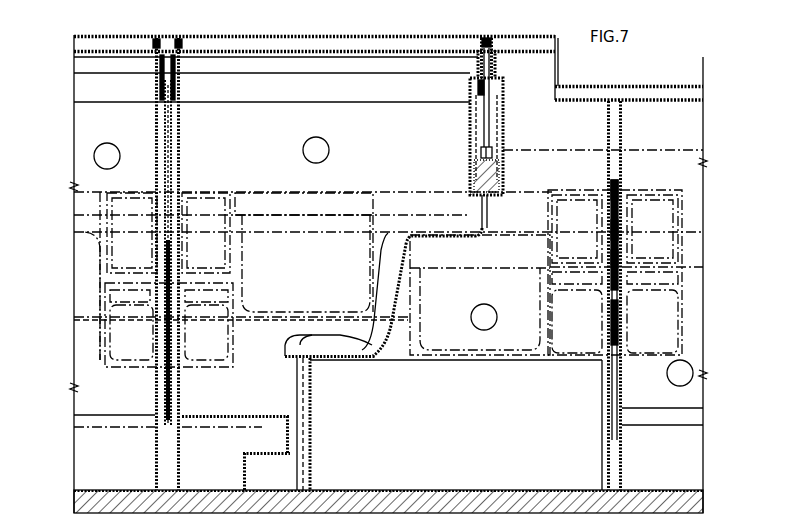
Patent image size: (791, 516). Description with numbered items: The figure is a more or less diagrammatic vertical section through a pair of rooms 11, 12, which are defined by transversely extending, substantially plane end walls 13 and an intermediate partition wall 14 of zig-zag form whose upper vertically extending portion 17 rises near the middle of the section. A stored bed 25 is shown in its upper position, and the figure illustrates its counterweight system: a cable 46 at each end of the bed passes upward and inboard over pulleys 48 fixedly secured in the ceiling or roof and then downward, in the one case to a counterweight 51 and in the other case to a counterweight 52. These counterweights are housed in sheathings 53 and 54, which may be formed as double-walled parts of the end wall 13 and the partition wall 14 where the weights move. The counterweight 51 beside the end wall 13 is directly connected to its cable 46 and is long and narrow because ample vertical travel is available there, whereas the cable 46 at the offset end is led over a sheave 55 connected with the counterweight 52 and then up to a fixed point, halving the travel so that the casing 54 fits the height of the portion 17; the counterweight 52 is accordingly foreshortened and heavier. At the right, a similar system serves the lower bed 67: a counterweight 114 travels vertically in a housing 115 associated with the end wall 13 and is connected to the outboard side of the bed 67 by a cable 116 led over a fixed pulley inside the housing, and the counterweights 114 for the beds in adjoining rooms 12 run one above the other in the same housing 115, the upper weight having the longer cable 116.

The room 11 is at (211, 153).
The room 12 is at (582, 345).
The end wall 13 is at (180, 137).
The intermediate partition wall 14 is at (488, 215).
The upper vertical portion 17 is at (488, 203).
The bed 25 is at (288, 70).
The cable 46 is at (172, 162).
The pulley 48 is at (175, 42).
The counterweight 51 is at (170, 300).
The counterweight 52 is at (476, 183).
The sheathing 53 is at (175, 180).
The casing 54 is at (470, 144).
The sheave 55 is at (490, 150).
The bed 67 is at (456, 424).
The counterweight 114 is at (622, 260).
The housing 115 is at (622, 231).
The cable 116 is at (622, 186).